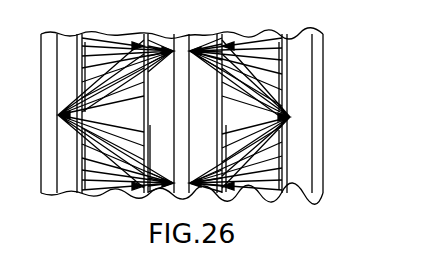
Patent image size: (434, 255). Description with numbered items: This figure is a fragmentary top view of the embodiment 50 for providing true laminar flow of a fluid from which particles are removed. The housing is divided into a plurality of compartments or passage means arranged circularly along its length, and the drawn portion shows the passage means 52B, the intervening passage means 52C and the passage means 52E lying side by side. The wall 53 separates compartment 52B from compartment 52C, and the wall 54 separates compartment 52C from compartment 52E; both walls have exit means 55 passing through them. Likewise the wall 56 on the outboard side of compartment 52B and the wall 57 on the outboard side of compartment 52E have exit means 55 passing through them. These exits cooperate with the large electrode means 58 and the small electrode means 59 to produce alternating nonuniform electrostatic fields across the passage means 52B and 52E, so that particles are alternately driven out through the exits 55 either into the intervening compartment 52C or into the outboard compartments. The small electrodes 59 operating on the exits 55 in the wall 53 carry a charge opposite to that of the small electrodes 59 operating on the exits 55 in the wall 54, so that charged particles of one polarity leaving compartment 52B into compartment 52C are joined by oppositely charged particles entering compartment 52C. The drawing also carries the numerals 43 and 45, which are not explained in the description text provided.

The embodiment for providing true laminar flow 50 is at (286, 22).
The passage means 52B is at (122, 184).
The intervening passage means 52C is at (200, 42).
The passage means 52E is at (258, 186).
The wall 53 is at (165, 50).
The wall 54 is at (214, 104).
The exit means 55 is at (140, 40).
The wall 56 is at (68, 50).
The wall 57 is at (289, 186).
The large electrode means 58 is at (77, 166).
The small electrode means 59 is at (60, 115).
The housing 43 is at (0, 250).
The housing 45 is at (179, 250).